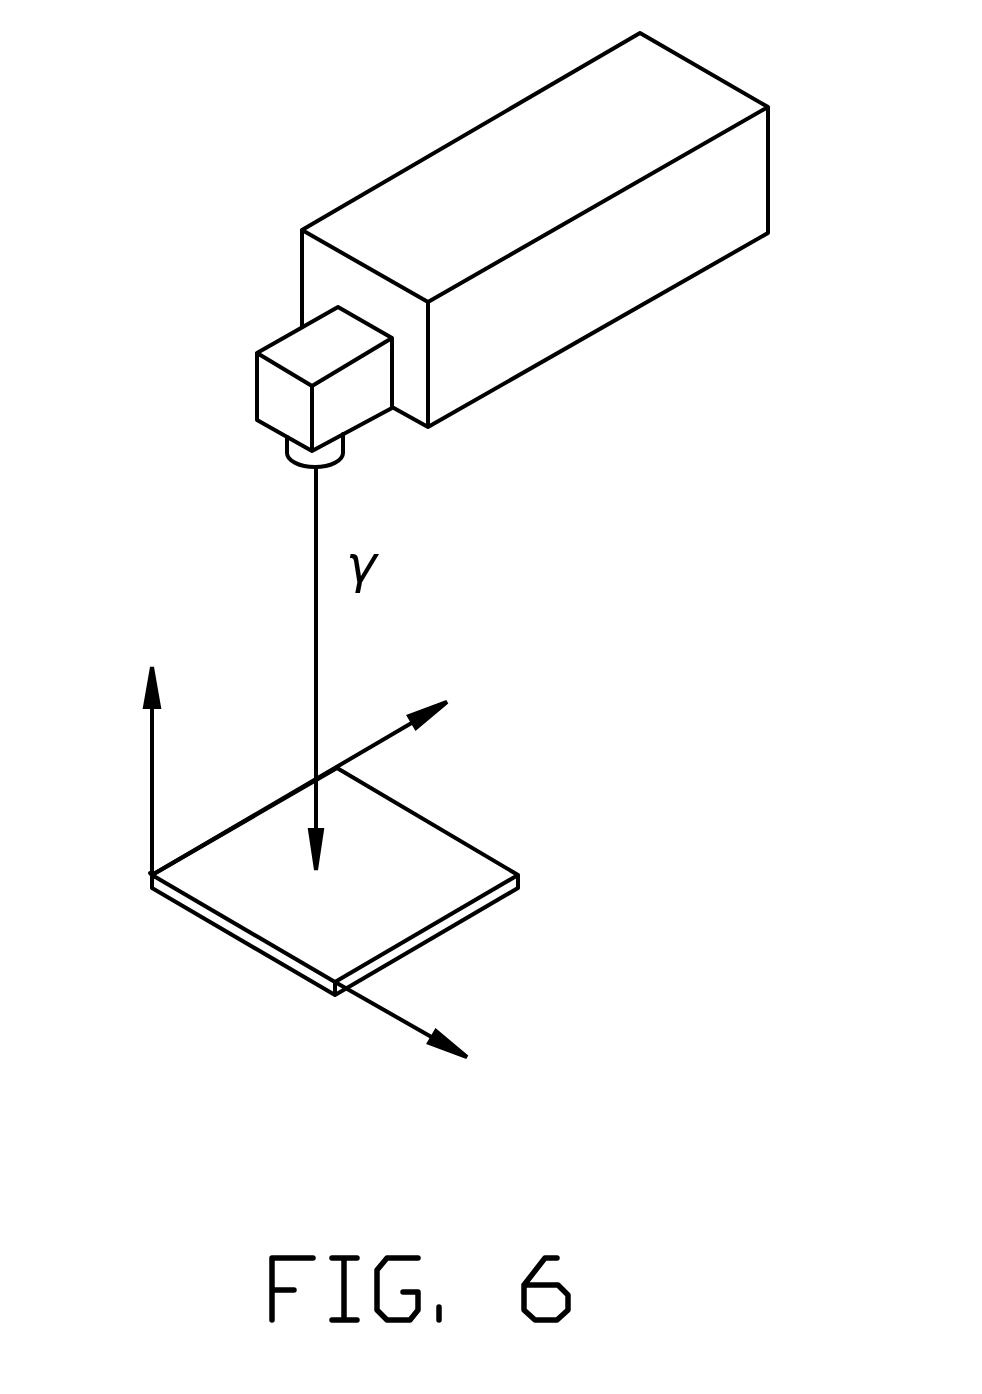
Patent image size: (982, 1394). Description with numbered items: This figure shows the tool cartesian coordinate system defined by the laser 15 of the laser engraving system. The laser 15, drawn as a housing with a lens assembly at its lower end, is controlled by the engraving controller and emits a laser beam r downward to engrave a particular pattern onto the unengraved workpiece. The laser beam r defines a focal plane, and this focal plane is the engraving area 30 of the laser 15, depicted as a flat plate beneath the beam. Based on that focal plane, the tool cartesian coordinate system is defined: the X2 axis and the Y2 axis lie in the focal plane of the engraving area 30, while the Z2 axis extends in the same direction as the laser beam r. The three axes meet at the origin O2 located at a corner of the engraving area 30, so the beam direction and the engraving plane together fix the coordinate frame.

The laser 15 is at (643, 125).
The engraving area 30 is at (415, 879).
The Z2 axis Z2 is at (114, 765).
The Y2 axis Y2 is at (299, 757).
The X2 axis X2 is at (401, 1040).
The origin of workpiece coordinate system O2 is at (121, 870).